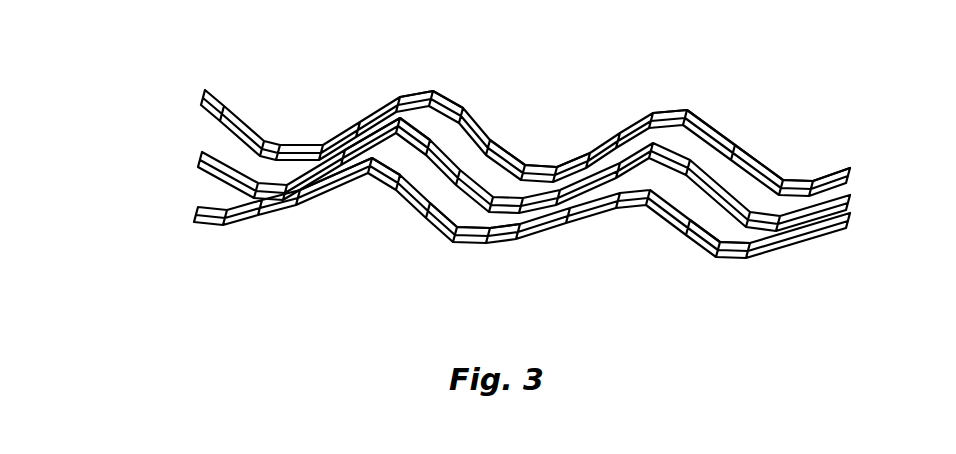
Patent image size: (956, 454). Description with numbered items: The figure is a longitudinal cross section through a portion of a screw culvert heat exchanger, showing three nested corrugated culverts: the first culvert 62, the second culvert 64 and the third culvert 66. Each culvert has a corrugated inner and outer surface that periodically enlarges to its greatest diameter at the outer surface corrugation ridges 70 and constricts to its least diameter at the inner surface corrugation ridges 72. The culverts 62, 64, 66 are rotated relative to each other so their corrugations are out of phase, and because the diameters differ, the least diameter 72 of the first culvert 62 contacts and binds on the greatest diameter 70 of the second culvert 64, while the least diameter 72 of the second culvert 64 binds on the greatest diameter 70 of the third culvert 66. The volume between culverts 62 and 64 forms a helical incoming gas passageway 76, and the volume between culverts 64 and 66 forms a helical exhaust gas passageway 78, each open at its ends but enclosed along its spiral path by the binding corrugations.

The first culvert 62 is at (204, 100).
The second culvert 64 is at (202, 163).
The third culvert 66 is at (198, 213).
The outer surface corrugation ridges 70 is at (433, 90).
The inner surface corrugation ridges 72 is at (545, 190).
The incoming gas passageway 76 is at (494, 172).
The exhaust gas passageway 78 is at (469, 212).